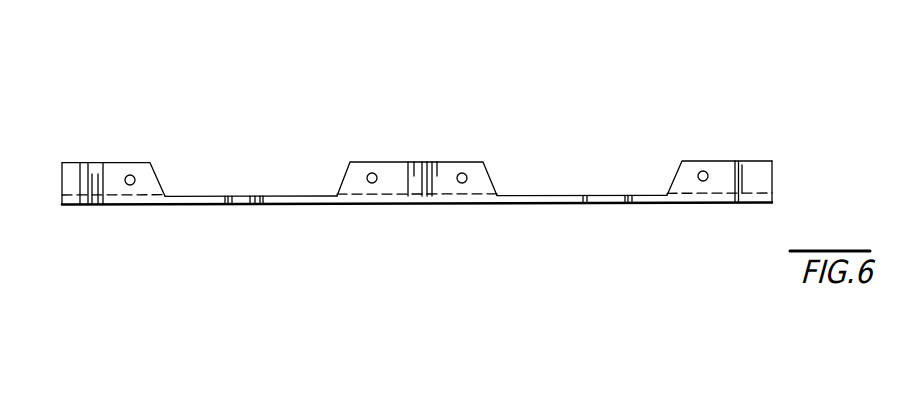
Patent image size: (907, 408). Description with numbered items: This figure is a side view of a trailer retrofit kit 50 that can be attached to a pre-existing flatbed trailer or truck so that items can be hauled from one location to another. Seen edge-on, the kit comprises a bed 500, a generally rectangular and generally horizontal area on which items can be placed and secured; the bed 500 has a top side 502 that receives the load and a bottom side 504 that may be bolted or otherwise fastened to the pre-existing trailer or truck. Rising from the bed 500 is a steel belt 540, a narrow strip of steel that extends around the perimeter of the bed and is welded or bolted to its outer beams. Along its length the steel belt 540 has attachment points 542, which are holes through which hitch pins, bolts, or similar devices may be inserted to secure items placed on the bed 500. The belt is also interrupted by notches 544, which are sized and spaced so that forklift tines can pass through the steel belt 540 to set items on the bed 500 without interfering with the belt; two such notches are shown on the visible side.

The retrofit kit 50 is at (446, 164).
The bed 500 is at (417, 153).
The top side 502 is at (475, 138).
The bottom side 504 is at (417, 242).
The steel belt 540 is at (446, 139).
The notches 544 is at (415, 150).
The attachment points 542 is at (416, 214).